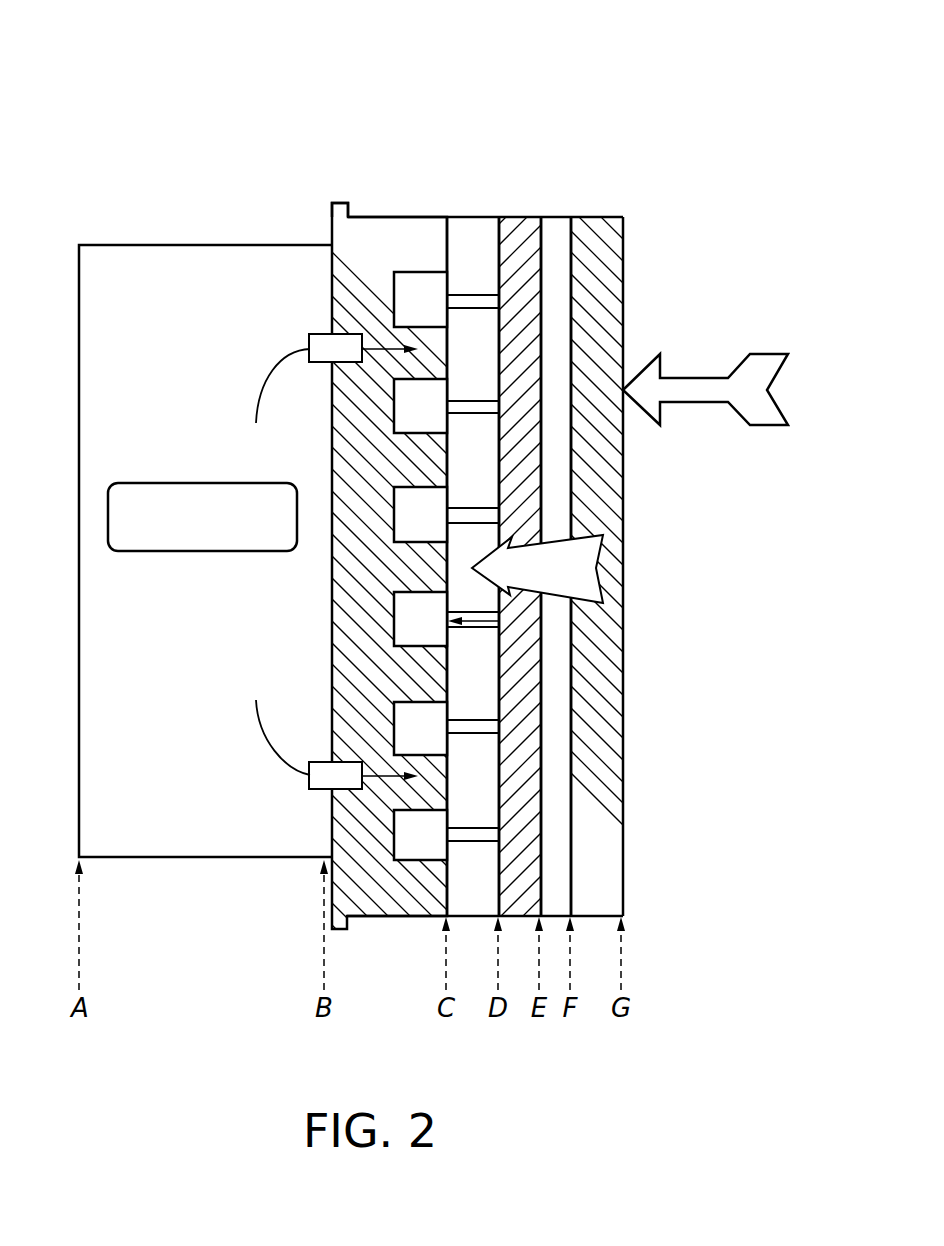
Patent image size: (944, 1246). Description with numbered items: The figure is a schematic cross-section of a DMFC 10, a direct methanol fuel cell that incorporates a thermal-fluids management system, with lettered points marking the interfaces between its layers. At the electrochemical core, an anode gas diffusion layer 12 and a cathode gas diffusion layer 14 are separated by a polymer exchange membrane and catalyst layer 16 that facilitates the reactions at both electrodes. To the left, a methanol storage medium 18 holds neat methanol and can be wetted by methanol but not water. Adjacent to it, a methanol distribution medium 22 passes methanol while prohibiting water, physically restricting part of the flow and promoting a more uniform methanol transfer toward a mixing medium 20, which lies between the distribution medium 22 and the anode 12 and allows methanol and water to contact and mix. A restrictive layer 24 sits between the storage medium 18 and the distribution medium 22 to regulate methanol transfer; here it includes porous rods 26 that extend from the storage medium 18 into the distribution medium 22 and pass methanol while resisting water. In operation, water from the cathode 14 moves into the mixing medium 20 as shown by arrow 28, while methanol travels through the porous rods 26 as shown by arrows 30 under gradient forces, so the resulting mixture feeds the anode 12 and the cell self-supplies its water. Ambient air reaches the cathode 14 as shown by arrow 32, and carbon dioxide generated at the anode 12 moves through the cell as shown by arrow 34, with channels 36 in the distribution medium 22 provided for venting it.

The DMFC 10 is at (343, 117).
The anode gas diffusion layer 12 is at (522, 223).
The cathode gas diffusion layer 14 is at (598, 228).
The polymer exchange membrane and catalyst layer 16 is at (558, 225).
The methanol storage medium 18 is at (233, 245).
The mixing medium 20 is at (473, 226).
The methanol distribution medium 22 is at (373, 217).
The restrictive layer 24 is at (343, 203).
The porous rods 26 is at (318, 334).
The arrow 28 is at (588, 585).
The arrows 30 is at (272, 370).
The arrow 32 is at (770, 427).
The arrow 34 is at (478, 621).
The channels 36 is at (417, 848).